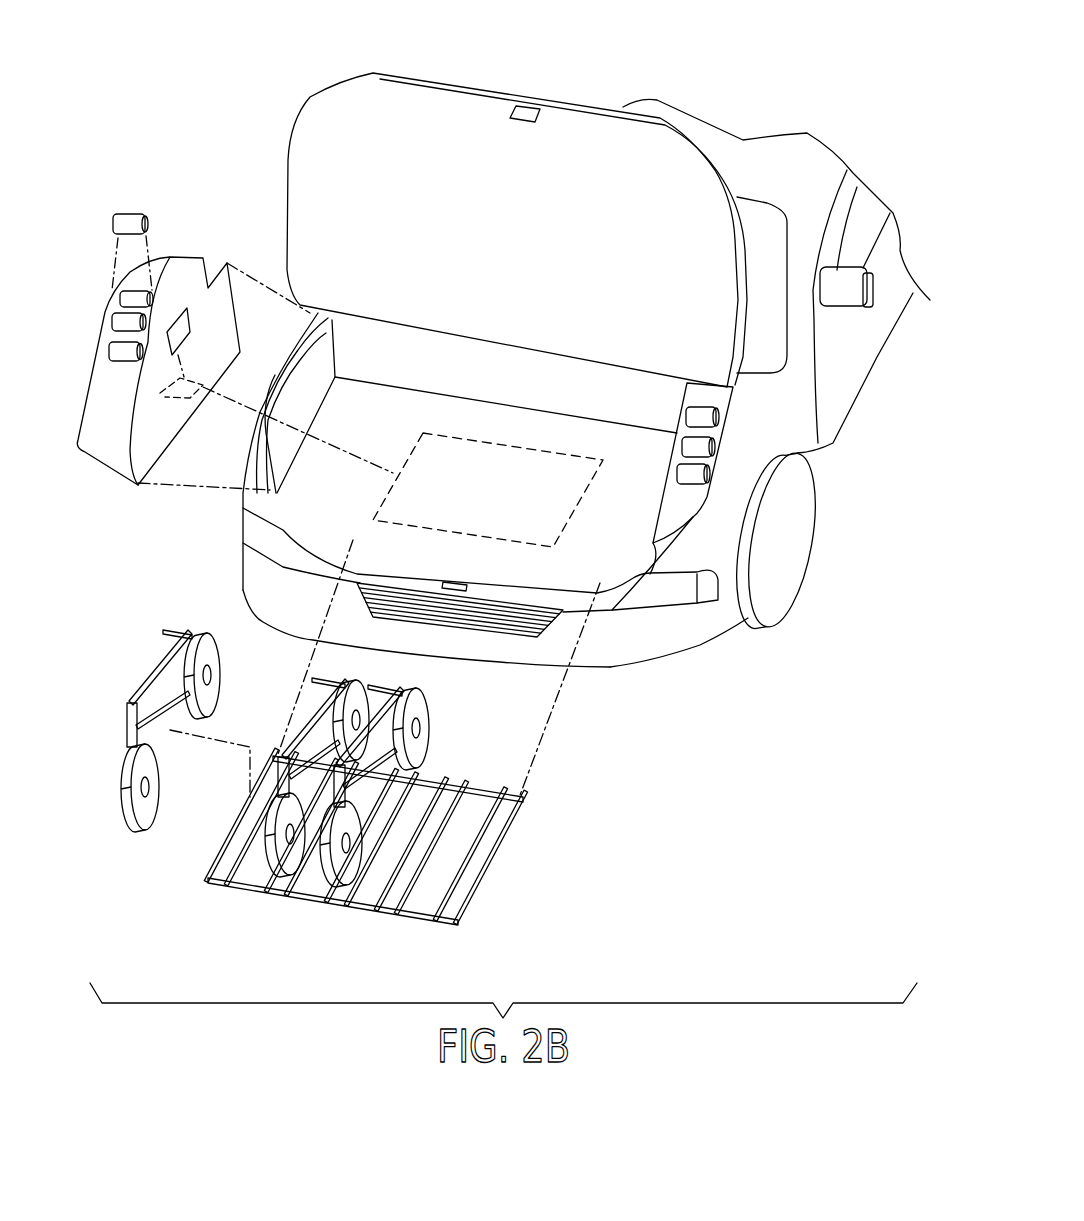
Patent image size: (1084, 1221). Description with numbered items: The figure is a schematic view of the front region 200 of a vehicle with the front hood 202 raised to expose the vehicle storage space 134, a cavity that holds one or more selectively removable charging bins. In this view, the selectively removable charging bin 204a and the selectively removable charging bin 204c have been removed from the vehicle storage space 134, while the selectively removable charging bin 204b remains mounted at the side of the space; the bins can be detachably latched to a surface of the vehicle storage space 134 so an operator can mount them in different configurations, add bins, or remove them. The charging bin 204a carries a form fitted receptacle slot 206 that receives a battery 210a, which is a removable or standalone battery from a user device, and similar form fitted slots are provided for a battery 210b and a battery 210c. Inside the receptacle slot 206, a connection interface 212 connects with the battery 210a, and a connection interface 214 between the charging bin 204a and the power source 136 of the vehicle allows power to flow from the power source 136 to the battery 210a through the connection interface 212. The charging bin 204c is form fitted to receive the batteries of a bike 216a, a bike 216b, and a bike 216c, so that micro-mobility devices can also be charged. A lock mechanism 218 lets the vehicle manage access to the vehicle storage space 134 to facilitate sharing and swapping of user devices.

The front region 200 is at (796, 83).
The front hood 202 is at (340, 125).
The lock mechanism 218 is at (530, 108).
The power source 136 is at (513, 443).
The selectively removable charging bin 204b is at (690, 510).
The vehicle storage space 134 is at (631, 558).
The selectively removable charging bin 204a is at (165, 356).
The form fitted receptacle slot 206 is at (120, 297).
The battery 210a is at (125, 218).
The battery 210b is at (112, 330).
The battery 210c is at (125, 358).
The connection interface 212 is at (188, 322).
The connection interface 214 is at (175, 400).
The bike 216a is at (153, 680).
The bike 216b is at (307, 722).
The bike 216c is at (427, 723).
The selectively removable charging bin 204c is at (363, 801).